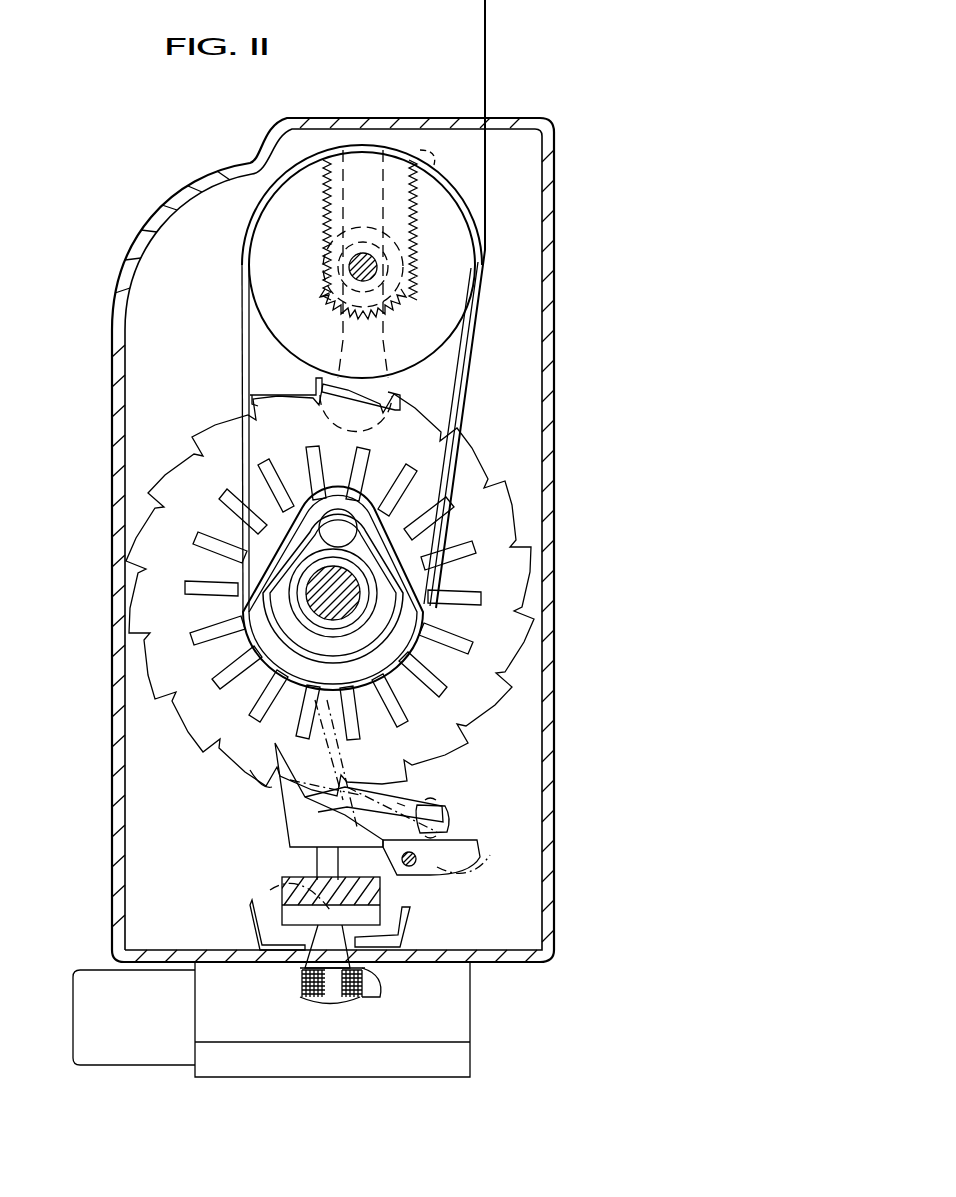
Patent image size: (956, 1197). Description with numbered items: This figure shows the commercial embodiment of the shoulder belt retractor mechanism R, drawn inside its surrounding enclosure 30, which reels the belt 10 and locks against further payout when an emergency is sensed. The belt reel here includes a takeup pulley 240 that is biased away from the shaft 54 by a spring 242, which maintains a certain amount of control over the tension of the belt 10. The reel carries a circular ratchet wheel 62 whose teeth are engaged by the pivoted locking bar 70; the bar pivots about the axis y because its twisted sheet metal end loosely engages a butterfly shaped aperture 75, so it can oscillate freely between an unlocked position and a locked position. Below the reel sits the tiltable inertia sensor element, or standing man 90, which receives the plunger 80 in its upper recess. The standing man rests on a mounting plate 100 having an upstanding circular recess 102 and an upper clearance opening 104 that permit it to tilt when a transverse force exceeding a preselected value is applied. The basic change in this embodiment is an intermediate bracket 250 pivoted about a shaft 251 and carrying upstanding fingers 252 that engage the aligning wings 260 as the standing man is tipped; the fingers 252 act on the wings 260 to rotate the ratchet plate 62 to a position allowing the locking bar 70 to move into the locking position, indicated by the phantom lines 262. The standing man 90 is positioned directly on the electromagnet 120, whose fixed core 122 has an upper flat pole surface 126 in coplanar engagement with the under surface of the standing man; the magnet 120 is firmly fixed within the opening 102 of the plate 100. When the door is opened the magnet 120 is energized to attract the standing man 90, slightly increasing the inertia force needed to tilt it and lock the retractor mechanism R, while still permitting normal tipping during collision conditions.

The belt 10 is at (488, 42).
The housing 30 is at (556, 142).
The takeup pulley 240 is at (375, 170).
The spring 242 is at (428, 152).
The retractor mechanism R is at (527, 438).
The shaft 54 is at (350, 580).
The ratchet wheel 62 is at (478, 712).
The aligning wings 260 is at (232, 675).
The upstanding fingers 252 is at (275, 765).
The phantom lever position 262 is at (355, 832).
The intermediate bracket 250 is at (290, 816).
The locking bar 70 is at (410, 792).
The pivotal axis y is at (400, 803).
The butterfly shaped aperture 75 is at (466, 824).
The shaft 251 is at (432, 858).
The plunger 80 is at (318, 862).
The standing man 90 is at (285, 880).
The upper clearance opening 104 is at (256, 906).
The mounting plate 100 is at (410, 922).
The upstanding circular recess 102 is at (300, 968).
The electromagnet 120 is at (380, 990).
The fixed core 122 is at (333, 990).
The upper flat surface 126 is at (352, 985).